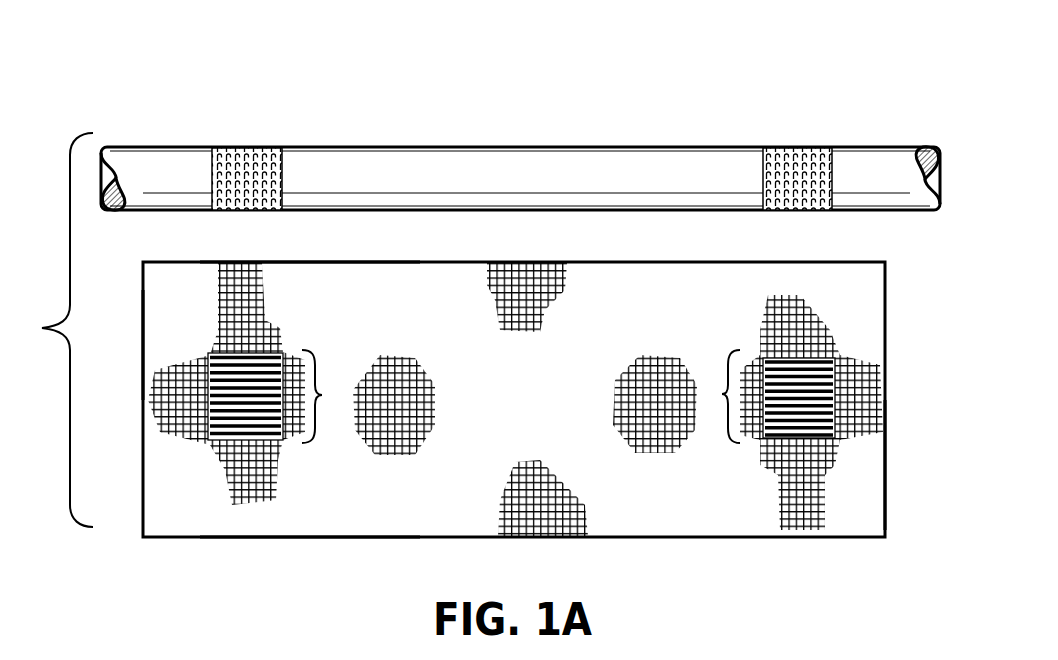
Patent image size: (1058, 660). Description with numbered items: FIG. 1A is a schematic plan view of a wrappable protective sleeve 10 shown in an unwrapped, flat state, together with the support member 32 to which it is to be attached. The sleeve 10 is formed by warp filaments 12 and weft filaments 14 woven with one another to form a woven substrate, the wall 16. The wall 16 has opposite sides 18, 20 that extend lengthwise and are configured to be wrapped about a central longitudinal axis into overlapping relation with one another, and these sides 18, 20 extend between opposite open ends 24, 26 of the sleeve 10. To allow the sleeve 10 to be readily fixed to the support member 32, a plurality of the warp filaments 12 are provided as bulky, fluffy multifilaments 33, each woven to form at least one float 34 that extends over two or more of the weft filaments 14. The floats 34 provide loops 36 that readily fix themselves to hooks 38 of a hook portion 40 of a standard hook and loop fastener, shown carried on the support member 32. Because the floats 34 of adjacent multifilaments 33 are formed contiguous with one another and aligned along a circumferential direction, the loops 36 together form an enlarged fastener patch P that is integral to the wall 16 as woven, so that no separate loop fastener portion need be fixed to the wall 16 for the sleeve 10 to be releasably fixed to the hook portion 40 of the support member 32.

The sleeve 10 is at (903, 318).
The warp filaments 12 is at (547, 313).
The weft filaments 14 is at (558, 399).
The wall 16 is at (858, 509).
The side 18 is at (313, 537).
The side 20 is at (315, 262).
The open end 24 is at (143, 335).
The open end 26 is at (885, 445).
The support member 32 is at (520, 133).
The bulky, fluffy multifilament 33 is at (521, 412).
The float 34 is at (521, 424).
The loops 36 is at (288, 446).
The hooks 38 is at (247, 163).
The hook portion 40 is at (536, 133).
The fastener patch P is at (515, 396).